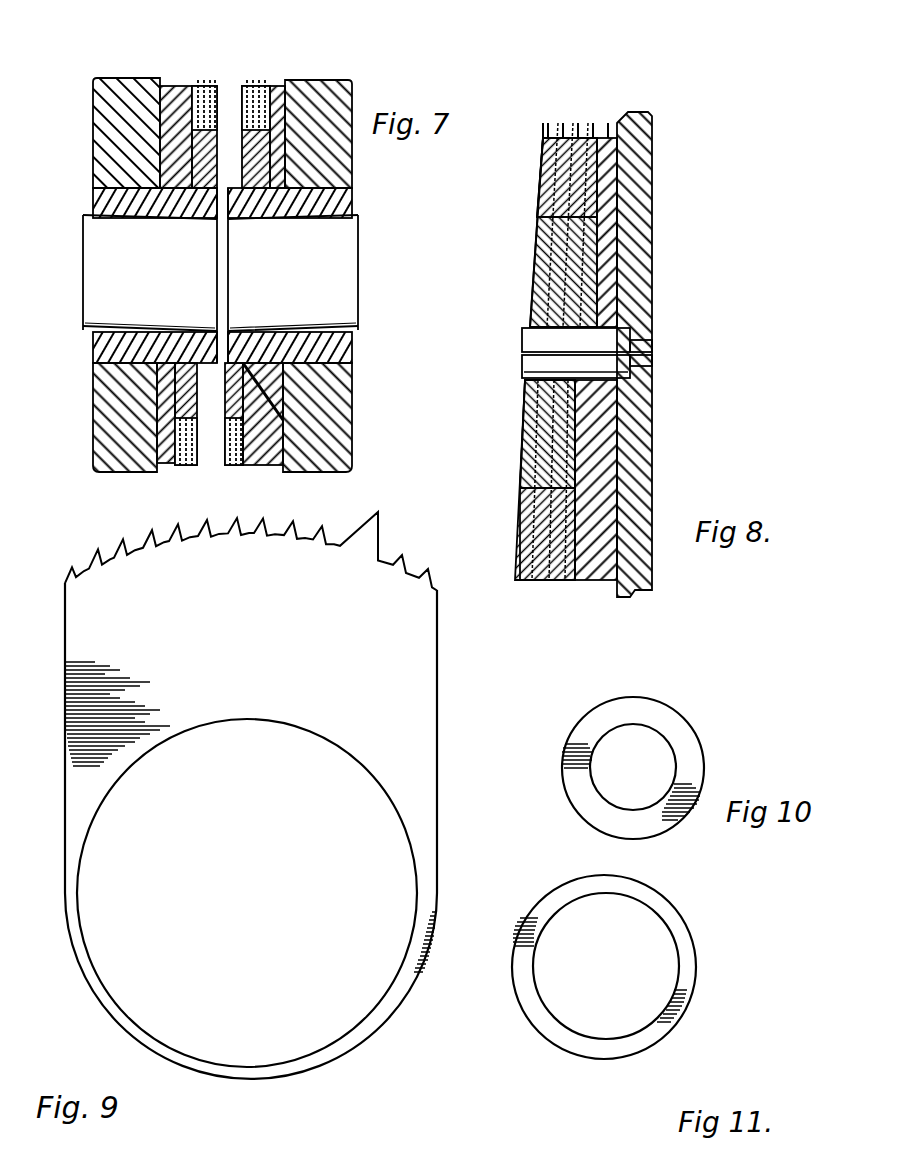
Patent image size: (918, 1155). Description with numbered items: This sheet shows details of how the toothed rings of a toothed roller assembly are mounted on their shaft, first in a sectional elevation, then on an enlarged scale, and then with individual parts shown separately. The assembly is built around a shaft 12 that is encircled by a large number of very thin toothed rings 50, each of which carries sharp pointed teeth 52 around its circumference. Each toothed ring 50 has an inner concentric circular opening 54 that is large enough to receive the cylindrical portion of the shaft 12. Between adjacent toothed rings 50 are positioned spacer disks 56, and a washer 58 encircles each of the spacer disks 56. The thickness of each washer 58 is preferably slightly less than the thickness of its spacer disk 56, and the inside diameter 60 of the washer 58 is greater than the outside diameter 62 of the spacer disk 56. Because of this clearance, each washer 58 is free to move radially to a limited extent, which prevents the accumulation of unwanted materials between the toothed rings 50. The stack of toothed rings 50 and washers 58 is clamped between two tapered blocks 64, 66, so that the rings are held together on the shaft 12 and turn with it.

In FIG. 7, the shaft 12 is at (97, 270).
In FIG. 8, the shaft 12 is at (650, 346).
In FIG. 7, the toothed ring 50 is at (240, 100).
In FIG. 8, the toothed ring 50 is at (532, 150).
In FIG. 9, the toothed ring 50 is at (274, 782).
In FIG. 7, the teeth 52 is at (222, 95).
In FIG. 8, the teeth 52 is at (549, 125).
In FIG. 9, the teeth 52 is at (251, 538).
In FIG. 9, the inner concentric circular opening 54 is at (244, 720).
In FIG. 7, the spacer disk 56 is at (228, 372).
In FIG. 8, the spacer disk 56 is at (530, 416).
In FIG. 10, the spacer disk 56 is at (652, 710).
In FIG. 7, the washer 58 is at (180, 465).
In FIG. 8, the washer 58 is at (560, 582).
In FIG. 11, the washer 58 is at (686, 976).
In FIG. 11, the inside diameter 60 is at (622, 900).
In FIG. 10, the outside diameter 62 is at (574, 812).
In FIG. 7, the tapered block 64 is at (165, 472).
In FIG. 7, the tapered block 66 is at (264, 464).